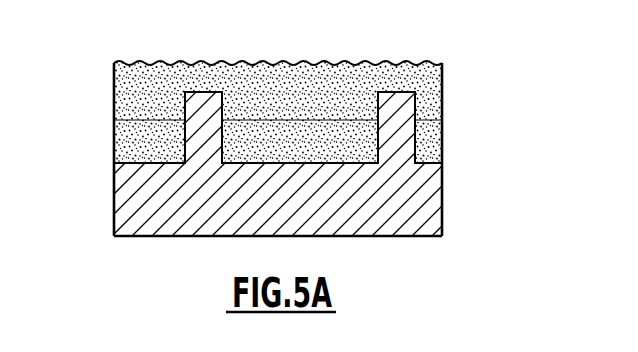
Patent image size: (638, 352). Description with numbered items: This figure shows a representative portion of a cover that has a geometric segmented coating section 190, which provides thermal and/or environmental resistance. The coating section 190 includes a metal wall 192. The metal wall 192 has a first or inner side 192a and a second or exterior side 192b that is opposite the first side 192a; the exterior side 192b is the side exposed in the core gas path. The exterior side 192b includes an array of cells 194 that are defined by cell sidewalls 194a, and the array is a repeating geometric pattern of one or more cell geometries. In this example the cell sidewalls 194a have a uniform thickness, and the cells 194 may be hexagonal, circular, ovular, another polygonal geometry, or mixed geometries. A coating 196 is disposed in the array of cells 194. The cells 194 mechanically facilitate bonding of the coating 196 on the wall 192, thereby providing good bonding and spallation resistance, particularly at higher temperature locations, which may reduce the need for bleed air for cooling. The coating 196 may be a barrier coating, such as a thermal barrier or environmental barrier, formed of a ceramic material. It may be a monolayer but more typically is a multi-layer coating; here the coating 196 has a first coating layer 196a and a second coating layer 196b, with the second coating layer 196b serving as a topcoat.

The geometric segmented coating section 190 is at (298, 157).
The metal wall 192 is at (298, 196).
The first or inner side 192a is at (371, 238).
The second or exterior side 192b is at (130, 162).
The cells 194 is at (290, 108).
The cell sidewalls 194a is at (237, 98).
The coating 196 is at (313, 88).
The first coating layer 196a is at (435, 143).
The second coating layer 196b is at (435, 93).